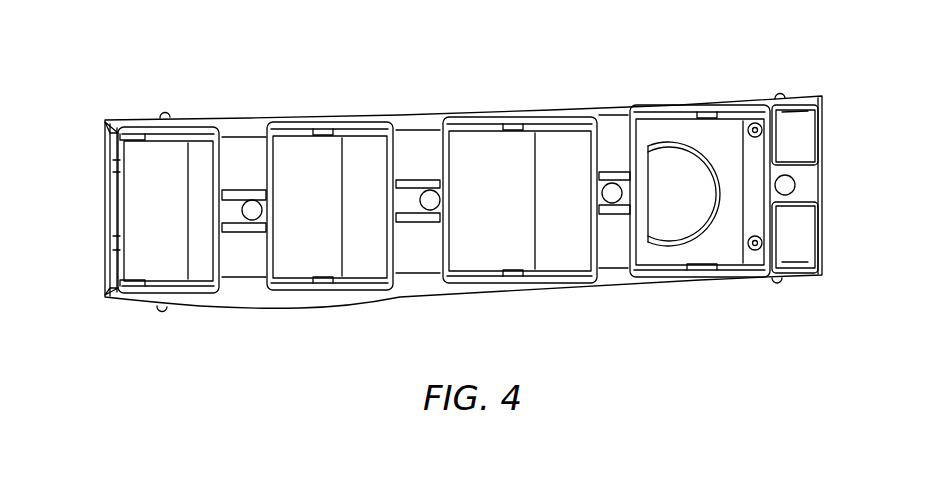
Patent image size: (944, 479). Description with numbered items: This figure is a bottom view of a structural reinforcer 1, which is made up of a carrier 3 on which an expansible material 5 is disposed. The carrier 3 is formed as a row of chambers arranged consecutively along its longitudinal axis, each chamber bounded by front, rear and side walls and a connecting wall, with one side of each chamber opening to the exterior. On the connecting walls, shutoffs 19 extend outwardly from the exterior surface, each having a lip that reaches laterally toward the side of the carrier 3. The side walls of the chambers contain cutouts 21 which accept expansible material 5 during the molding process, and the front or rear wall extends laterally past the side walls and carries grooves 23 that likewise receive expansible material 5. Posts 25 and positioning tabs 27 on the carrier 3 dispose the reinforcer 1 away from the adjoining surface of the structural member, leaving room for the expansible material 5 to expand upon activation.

The structural reinforcer 1 is at (814, 59).
The carrier 3 is at (104, 214).
The expansible material 5 is at (739, 103).
The shutoff 19 is at (425, 183).
The cutout 21 is at (318, 136).
The groove 23 is at (105, 123).
The post 25 is at (760, 124).
The positioning tab 27 is at (117, 166).